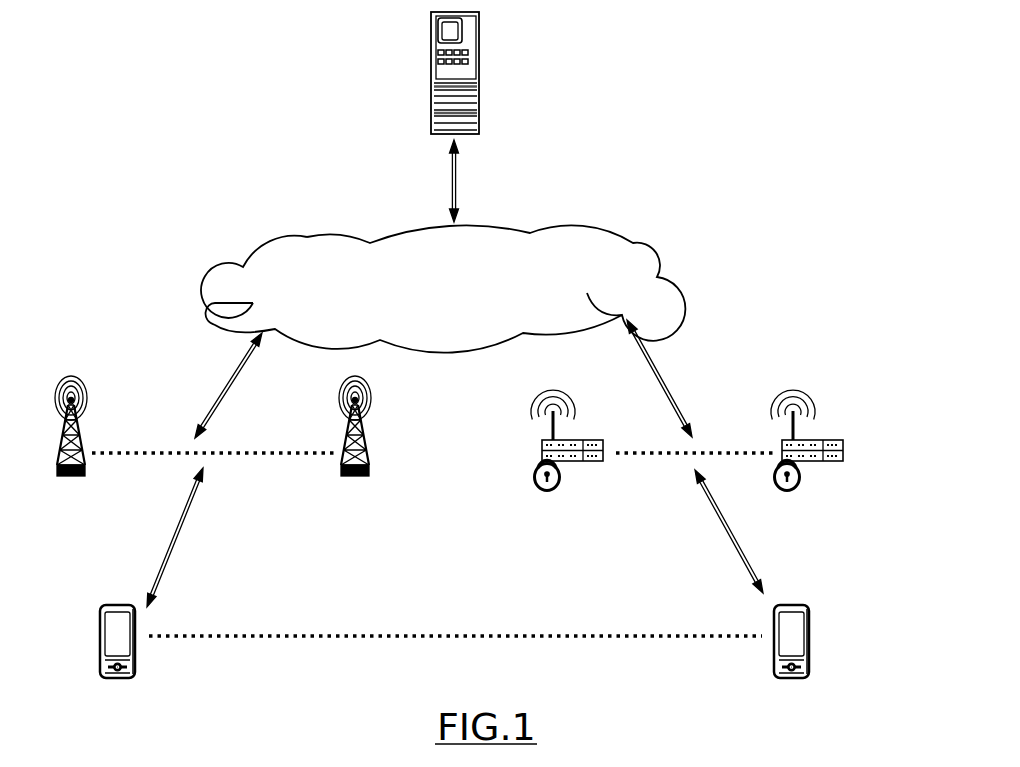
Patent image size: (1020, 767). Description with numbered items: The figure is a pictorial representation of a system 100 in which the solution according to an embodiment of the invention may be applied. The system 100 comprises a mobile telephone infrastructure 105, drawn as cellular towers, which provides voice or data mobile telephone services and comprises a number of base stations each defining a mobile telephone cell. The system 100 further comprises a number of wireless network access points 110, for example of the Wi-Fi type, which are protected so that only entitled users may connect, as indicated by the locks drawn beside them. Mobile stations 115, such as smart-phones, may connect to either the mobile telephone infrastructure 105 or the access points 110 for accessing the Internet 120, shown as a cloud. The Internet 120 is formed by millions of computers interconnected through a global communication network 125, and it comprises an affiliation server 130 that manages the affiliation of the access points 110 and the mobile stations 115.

The system 100 is at (647, 108).
The mobile telephone infrastructure 105 is at (68, 477).
The access point 110 is at (566, 462).
The mobile station 115 is at (123, 678).
The Internet 120 is at (384, 193).
The global communication network 125 is at (304, 238).
The affiliation server 130 is at (432, 107).